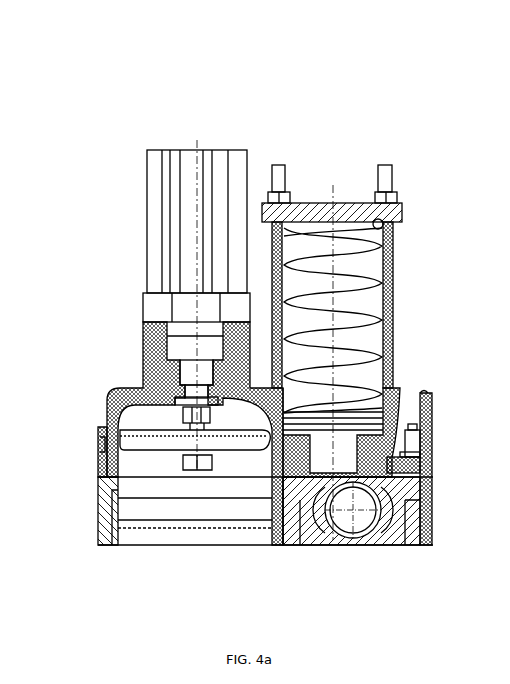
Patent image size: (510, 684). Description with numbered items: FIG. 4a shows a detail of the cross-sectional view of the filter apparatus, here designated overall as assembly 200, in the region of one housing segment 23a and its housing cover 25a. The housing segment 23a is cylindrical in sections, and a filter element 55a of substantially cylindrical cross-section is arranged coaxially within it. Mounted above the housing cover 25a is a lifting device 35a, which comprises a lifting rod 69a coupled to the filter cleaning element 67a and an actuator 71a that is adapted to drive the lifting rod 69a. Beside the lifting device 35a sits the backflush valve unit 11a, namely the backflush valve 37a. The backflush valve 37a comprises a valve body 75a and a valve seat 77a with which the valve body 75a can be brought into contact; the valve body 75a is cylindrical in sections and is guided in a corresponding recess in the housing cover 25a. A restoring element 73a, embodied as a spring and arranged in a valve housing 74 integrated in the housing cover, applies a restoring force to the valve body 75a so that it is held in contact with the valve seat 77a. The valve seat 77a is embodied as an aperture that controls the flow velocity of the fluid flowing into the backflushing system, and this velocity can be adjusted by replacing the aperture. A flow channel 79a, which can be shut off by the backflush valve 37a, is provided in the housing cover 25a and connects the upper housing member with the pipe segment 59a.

The valve assembly 200 is at (342, 88).
The lifting device 35a is at (160, 148).
The actuator 71a is at (206, 160).
The spring unit 11a is at (352, 168).
The valve housing 74 is at (385, 219).
The restoring element 73a is at (392, 277).
The backflush valve 37a is at (398, 382).
The lifting rod 69a is at (183, 377).
The housing cover 25a is at (132, 390).
The diaphragm disc 67a is at (150, 425).
The valve body 75a is at (328, 456).
The valve seat 77a is at (384, 481).
The housing segment 23a is at (110, 488).
The filter element 55a is at (152, 530).
The flow channel 79a is at (290, 470).
The pipe segment 59a is at (355, 518).